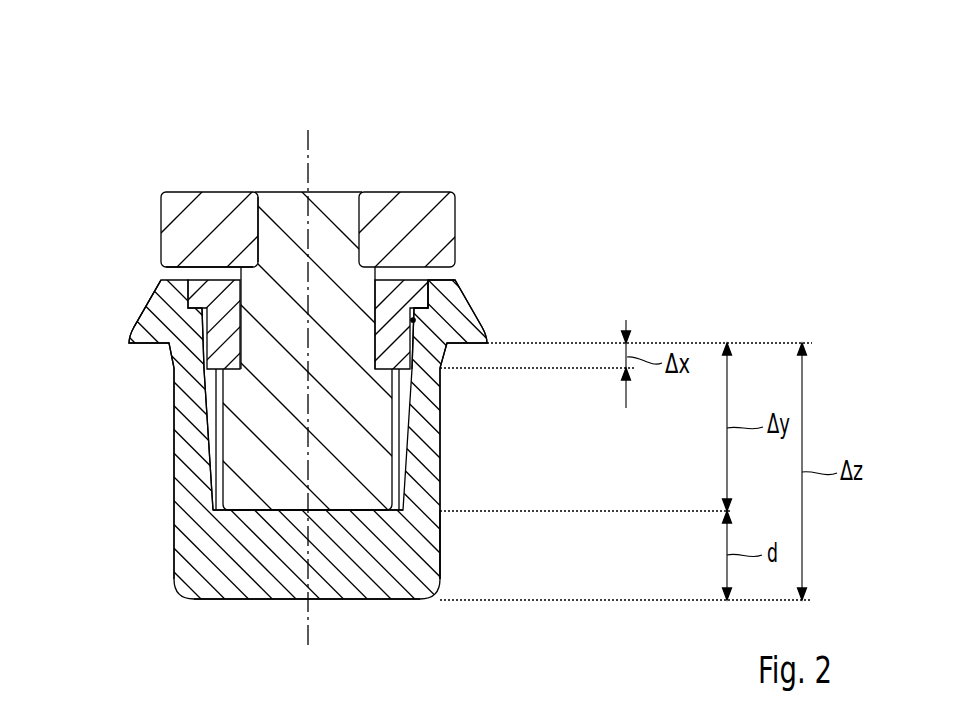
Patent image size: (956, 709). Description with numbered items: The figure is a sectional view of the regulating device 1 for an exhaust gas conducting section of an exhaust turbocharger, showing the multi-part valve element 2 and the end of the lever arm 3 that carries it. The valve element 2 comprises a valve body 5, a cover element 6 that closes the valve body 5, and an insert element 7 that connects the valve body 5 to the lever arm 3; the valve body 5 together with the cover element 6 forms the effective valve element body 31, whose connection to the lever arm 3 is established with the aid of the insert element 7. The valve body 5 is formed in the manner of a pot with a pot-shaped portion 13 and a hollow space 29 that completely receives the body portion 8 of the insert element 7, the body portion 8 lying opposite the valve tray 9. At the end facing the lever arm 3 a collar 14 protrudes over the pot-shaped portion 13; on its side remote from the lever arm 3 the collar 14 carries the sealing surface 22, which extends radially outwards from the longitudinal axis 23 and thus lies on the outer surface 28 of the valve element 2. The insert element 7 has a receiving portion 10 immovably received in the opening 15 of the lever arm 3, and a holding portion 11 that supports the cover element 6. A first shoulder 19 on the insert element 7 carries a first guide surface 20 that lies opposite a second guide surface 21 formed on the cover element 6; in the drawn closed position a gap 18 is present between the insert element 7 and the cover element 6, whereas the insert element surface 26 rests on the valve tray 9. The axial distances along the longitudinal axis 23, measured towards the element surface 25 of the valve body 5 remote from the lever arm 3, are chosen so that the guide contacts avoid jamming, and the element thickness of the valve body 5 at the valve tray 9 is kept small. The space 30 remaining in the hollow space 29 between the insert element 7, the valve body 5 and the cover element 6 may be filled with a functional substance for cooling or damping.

The regulating device 1 is at (588, 228).
The valve element 2 is at (553, 455).
The lever arm 3 is at (410, 188).
The valve body 5 is at (458, 526).
The cover element 6 is at (414, 320).
The insert element 7 is at (412, 456).
The body portion 8 is at (380, 492).
The valve tray 9 is at (262, 510).
The receiving portion 10 is at (341, 200).
The holding portion 11 is at (262, 302).
The pot-shaped portion 13 is at (432, 420).
The collar 14 is at (467, 297).
The opening 15 is at (277, 192).
The gap 18 is at (195, 371).
The first shoulder 19 is at (140, 328).
The first guide surface 20 is at (372, 356).
The second guide surface 21 is at (418, 384).
The sealing surface 22 is at (138, 342).
The longitudinal axis 23 is at (309, 128).
The element surface 25 is at (366, 600).
The insert element surface 26 is at (262, 512).
The outer surface 28 is at (174, 515).
The hollow space 29 is at (149, 409).
The space 30 is at (210, 403).
The effective valve element body 31 is at (466, 266).